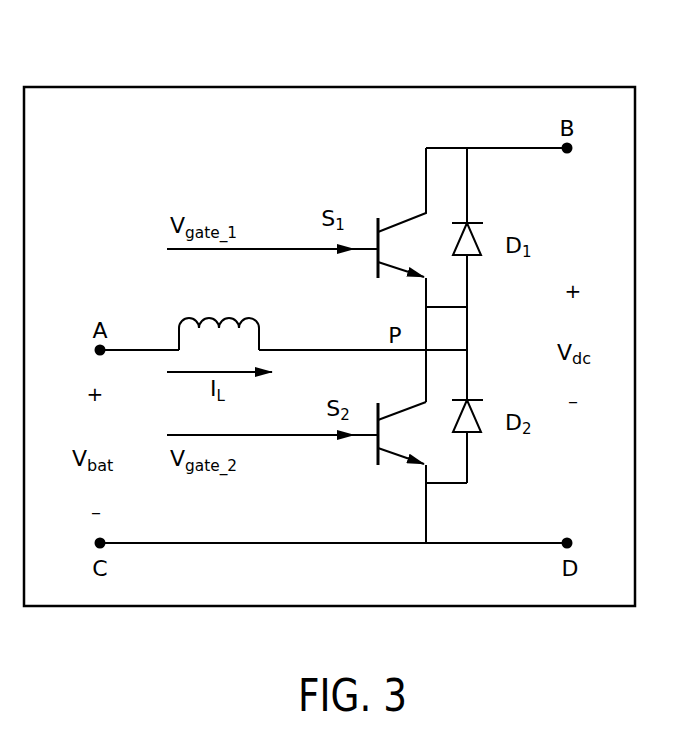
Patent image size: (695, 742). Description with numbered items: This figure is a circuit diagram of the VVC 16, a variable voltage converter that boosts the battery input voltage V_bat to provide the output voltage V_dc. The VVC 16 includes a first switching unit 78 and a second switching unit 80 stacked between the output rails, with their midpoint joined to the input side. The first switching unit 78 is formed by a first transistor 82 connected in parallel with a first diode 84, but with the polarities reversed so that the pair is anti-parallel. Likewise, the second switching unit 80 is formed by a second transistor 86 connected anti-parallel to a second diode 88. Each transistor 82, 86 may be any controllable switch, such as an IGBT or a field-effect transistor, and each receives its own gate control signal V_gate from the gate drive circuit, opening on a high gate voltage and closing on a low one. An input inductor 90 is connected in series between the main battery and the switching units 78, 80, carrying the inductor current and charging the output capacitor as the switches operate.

The VVC 16 is at (497, 84).
The first switching unit 78 is at (308, 177).
The second switching unit 80 is at (360, 456).
The first transistor 82 is at (375, 268).
The first diode 84 is at (475, 258).
The second transistor 86 is at (376, 410).
The second diode 88 is at (476, 435).
The input inductor 90 is at (185, 320).